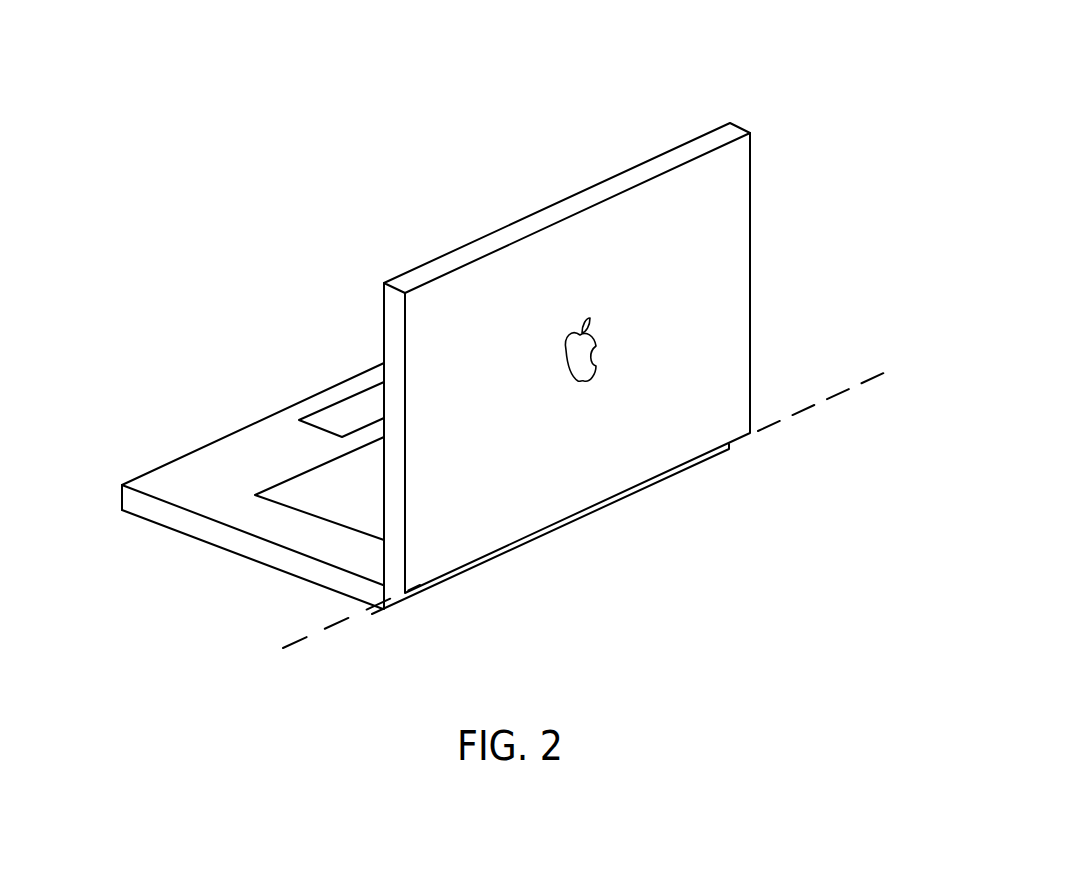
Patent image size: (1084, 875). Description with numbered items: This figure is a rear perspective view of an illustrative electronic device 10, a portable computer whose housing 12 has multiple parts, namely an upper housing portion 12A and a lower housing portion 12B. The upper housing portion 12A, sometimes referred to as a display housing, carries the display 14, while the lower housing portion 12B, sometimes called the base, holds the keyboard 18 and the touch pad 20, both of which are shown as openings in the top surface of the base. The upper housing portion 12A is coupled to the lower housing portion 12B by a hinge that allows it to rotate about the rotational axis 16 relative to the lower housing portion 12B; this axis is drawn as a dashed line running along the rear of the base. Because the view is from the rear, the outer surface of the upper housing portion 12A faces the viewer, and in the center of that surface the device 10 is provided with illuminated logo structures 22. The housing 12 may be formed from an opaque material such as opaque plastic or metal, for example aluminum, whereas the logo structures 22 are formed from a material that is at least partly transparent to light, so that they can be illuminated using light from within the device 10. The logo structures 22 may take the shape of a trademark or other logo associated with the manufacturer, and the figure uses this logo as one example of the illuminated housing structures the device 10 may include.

The electronic device 10 is at (754, 52).
The housing 12 is at (122, 497).
The upper housing portion 12A is at (762, 133).
The lower housing portion 12B is at (348, 604).
The display 14 is at (514, 200).
The rotational axis 16 is at (273, 652).
The keyboard 18 is at (292, 487).
The touch pad 20 is at (337, 412).
The illuminated logo structures 22 is at (585, 396).